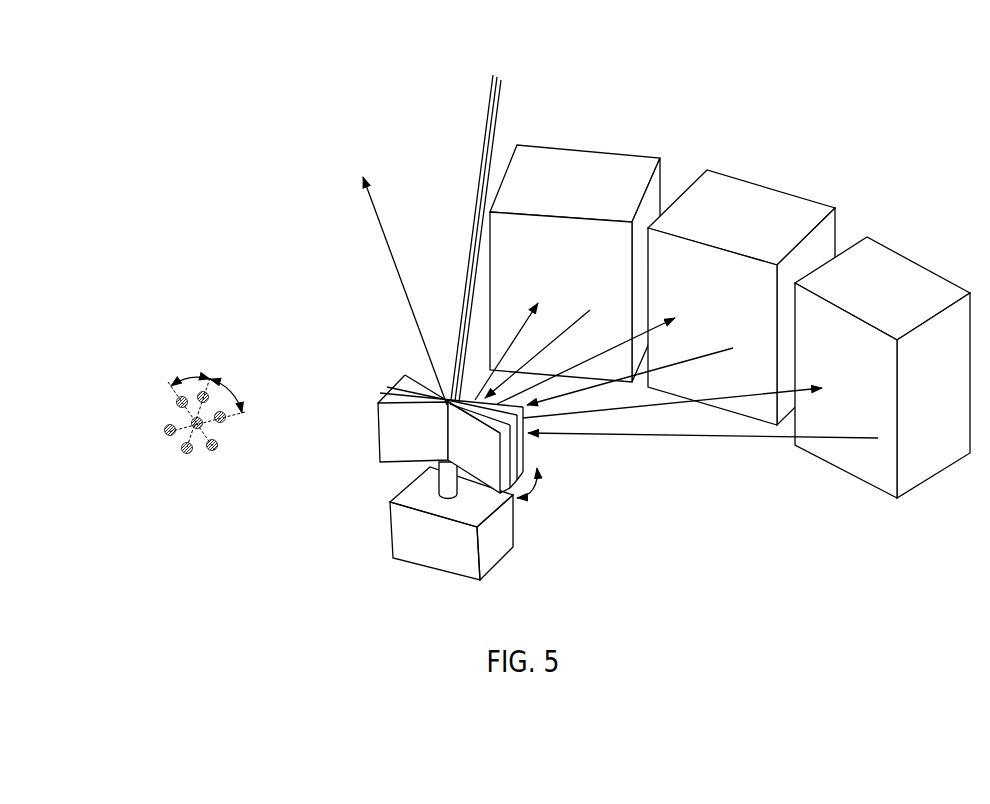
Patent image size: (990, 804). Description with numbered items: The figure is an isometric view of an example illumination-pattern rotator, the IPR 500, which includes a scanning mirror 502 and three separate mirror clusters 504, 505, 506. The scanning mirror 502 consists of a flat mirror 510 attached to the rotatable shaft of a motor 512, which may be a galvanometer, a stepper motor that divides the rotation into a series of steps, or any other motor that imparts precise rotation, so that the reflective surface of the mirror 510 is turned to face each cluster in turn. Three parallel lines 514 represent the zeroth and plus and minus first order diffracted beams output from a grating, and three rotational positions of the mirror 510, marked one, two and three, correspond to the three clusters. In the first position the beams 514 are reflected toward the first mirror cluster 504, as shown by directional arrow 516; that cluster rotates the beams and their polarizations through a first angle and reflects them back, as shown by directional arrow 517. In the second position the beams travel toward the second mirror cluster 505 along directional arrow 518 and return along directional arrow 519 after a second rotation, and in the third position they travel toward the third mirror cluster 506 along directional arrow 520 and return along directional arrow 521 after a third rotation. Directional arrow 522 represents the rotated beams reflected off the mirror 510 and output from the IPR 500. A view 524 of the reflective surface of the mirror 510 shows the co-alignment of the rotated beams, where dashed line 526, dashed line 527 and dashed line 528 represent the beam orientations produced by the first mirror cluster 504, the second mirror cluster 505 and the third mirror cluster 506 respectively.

The illumination-pattern rotator 500 is at (853, 112).
The scanning mirror 502 is at (360, 371).
The mirror cluster 1 504 is at (588, 162).
The mirror cluster 2 505 is at (765, 198).
The mirror cluster 3 506 is at (908, 268).
The mirror 510 is at (388, 389).
The motor 512 is at (500, 540).
The three parallel lines 514 is at (508, 97).
The directional arrow 516 is at (523, 320).
The directional arrow 517 is at (568, 320).
The directional arrow 518 is at (660, 320).
The directional arrow 519 is at (705, 355).
The directional arrow 520 is at (803, 387).
The directional arrow 521 is at (848, 435).
The directional arrow 522 is at (395, 272).
The view of the reflective surface of the mirror 524 is at (187, 336).
The dashed line 526 is at (215, 449).
The dashed line 527 is at (187, 453).
The dashed line 528 is at (167, 434).